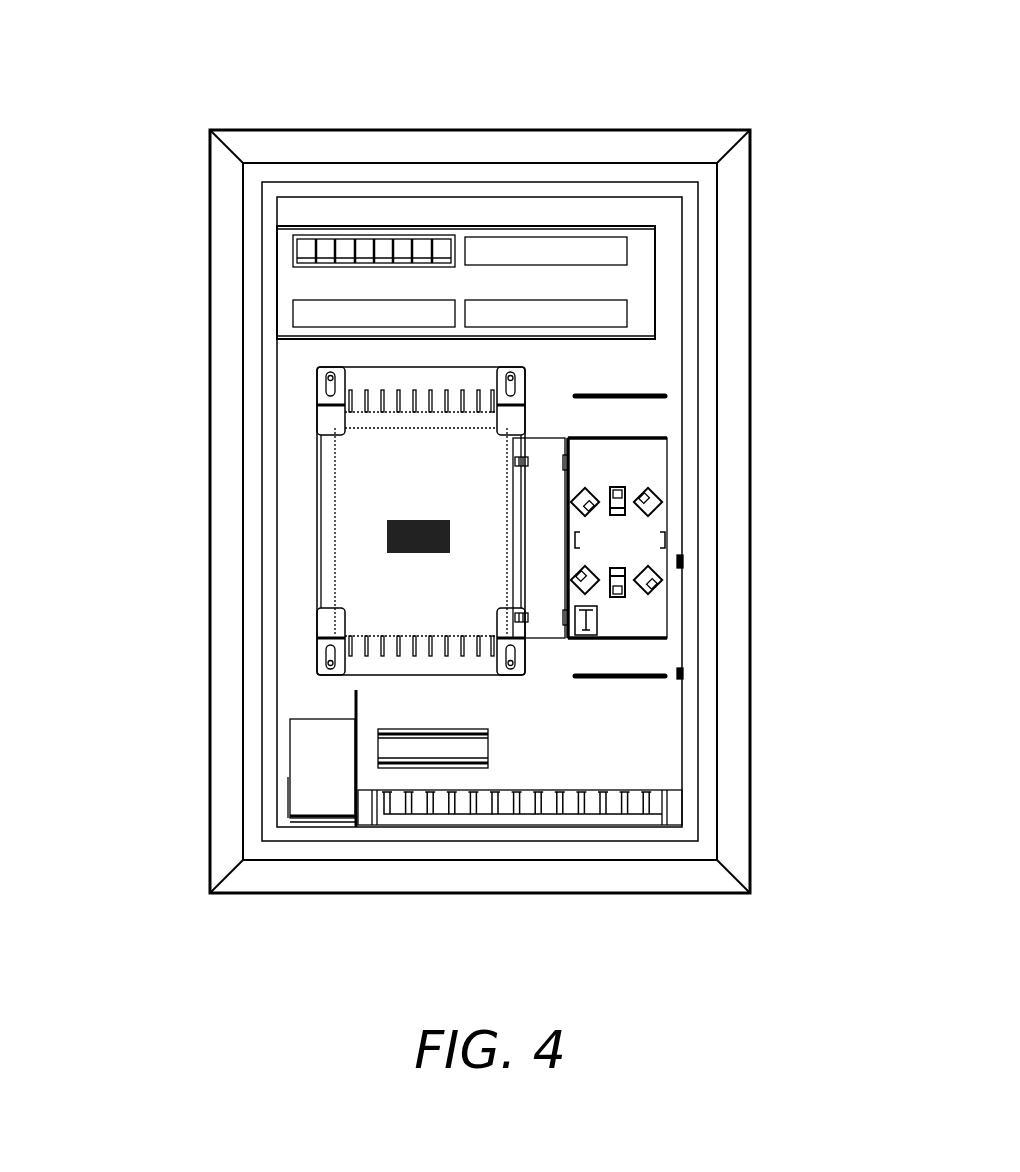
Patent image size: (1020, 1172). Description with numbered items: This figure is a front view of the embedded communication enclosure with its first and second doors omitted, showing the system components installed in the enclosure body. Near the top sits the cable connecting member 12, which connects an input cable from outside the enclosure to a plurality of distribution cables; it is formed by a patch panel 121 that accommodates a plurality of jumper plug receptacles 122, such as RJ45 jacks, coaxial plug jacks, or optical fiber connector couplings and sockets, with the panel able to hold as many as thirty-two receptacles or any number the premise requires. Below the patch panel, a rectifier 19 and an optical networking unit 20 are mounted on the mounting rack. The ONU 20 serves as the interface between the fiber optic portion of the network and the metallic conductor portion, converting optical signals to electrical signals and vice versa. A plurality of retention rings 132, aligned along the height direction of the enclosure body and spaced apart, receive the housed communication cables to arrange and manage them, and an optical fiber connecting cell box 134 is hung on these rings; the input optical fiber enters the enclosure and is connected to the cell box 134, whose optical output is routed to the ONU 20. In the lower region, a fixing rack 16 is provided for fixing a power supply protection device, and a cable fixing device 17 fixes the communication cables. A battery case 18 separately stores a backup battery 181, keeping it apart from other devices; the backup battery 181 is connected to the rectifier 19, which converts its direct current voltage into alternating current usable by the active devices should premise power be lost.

The cable connecting member 12 is at (466, 169).
The patch panel 121 is at (640, 257).
The jumper plug receptacles 122 is at (427, 248).
The rectifier 19 is at (308, 521).
The optical networking unit 20 is at (418, 514).
The retention rings 132 is at (664, 396).
The optical fiber connecting cell box 134 is at (652, 665).
The fixing rack 16 is at (488, 750).
The cable fixing device 17 is at (447, 820).
The battery case 18 is at (325, 820).
The backup battery 181 is at (315, 788).